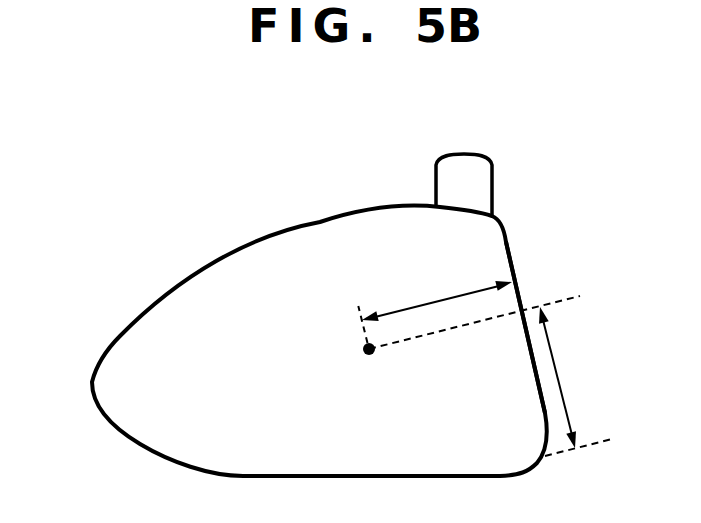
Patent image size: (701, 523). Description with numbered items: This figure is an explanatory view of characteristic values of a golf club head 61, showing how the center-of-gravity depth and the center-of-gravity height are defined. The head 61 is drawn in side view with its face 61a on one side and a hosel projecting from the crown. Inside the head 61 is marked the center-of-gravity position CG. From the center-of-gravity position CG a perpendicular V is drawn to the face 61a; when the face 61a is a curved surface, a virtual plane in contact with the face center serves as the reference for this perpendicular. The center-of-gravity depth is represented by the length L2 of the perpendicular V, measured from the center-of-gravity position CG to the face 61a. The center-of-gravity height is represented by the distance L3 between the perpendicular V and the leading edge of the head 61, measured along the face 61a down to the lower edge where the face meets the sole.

The head 61 is at (126, 257).
The face 61a is at (510, 247).
The center-of-gravity position CG is at (362, 358).
The perpendicular V is at (460, 326).
The length of the perpendicular L2 is at (437, 294).
The distance between the perpendicular and the leading edge L3 is at (575, 381).